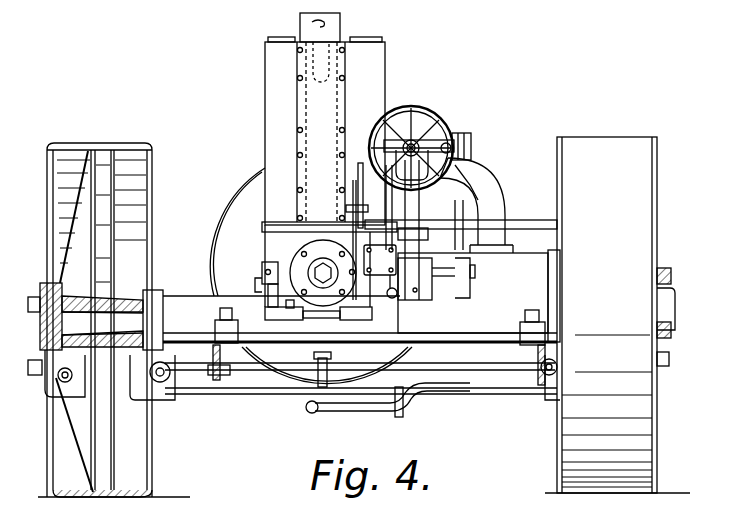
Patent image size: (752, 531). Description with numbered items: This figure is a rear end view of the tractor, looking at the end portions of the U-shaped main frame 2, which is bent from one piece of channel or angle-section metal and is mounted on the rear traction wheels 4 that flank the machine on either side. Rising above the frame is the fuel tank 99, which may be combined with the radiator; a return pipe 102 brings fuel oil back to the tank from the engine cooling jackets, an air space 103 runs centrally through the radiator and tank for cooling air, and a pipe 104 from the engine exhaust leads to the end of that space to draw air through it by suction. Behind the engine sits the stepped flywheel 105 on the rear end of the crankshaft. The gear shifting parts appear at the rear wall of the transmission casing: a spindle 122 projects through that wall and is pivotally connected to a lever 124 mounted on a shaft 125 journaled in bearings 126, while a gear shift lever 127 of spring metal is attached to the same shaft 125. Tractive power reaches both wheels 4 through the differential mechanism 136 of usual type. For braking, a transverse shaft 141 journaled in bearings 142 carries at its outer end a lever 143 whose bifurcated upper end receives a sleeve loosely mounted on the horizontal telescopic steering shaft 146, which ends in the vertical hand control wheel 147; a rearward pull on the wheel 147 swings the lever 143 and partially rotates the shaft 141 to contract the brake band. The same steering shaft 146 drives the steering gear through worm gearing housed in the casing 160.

The main frame 2 is at (229, 391).
The rear traction wheels 4 is at (150, 180).
The fuel tank 99 is at (368, 68).
The return pipe 102 is at (462, 190).
The air space 103 is at (360, 87).
The exhaust pipe 104 is at (336, 24).
The flywheel 105 is at (252, 198).
The spindle 122 is at (262, 267).
The lever 124 is at (266, 293).
The shaft 125 is at (318, 313).
The bearings 126 is at (293, 318).
The gear shift lever 127 is at (358, 180).
The differential mechanism 136 is at (382, 245).
The transverse shaft 141 is at (474, 272).
The bearings 142 is at (458, 284).
The lever 143 is at (420, 203).
The steering shaft 146 is at (428, 139).
The hand control wheel 147 is at (437, 118).
The casing 160 is at (470, 146).